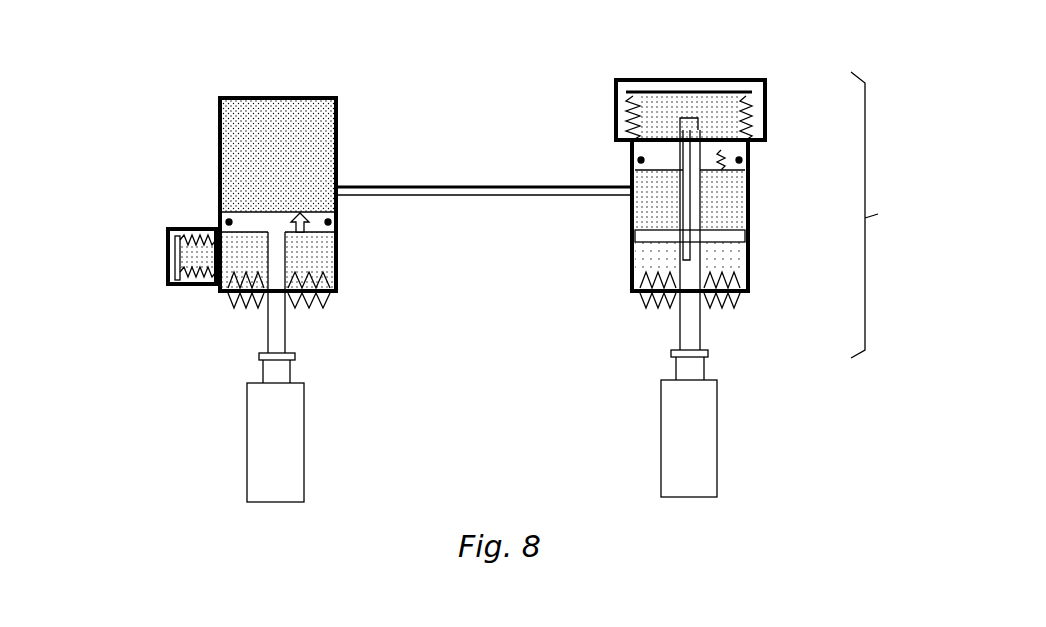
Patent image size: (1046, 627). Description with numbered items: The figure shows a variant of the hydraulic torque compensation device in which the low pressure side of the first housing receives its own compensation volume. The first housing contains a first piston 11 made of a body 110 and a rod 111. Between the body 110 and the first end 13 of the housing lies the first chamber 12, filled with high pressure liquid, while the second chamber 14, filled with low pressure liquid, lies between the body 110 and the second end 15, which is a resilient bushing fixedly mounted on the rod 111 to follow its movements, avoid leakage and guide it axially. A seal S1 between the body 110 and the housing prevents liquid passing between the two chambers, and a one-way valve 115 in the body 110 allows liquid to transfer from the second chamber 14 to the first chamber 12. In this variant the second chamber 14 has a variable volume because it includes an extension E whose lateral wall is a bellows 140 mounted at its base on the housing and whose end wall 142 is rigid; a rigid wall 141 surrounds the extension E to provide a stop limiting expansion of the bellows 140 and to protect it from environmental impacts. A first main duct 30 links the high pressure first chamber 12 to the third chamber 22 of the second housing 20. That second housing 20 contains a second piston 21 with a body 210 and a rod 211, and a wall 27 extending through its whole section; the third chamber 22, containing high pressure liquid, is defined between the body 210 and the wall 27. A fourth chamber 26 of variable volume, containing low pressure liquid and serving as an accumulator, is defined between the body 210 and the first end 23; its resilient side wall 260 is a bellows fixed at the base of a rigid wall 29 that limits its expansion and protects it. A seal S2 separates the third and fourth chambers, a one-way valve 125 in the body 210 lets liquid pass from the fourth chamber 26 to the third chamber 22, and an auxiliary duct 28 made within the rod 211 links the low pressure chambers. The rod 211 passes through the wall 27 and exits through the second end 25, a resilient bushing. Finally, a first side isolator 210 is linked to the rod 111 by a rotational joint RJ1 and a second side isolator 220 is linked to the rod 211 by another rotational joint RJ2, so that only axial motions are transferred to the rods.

The first end 13 is at (268, 93).
The first chamber 12 is at (311, 128).
The first piston 11 is at (262, 210).
The body 110 is at (242, 221).
The second chamber 14 is at (311, 268).
The one-way valve 115 is at (338, 240).
The second end 15 is at (313, 312).
The rod 111 is at (291, 340).
The rotational joint RJ1 is at (262, 346).
The first side isolator 210 is at (273, 506).
The extension E is at (163, 287).
The rigid wall 141 is at (164, 261).
The end wall 142 is at (172, 236).
The bellows 140 is at (200, 286).
The seal S1 is at (333, 224).
The first main duct 30 is at (503, 184).
The second housing 20 is at (771, 197).
The first end 23 is at (729, 87).
The rigid wall 29 is at (681, 78).
The fourth chamber 26 is at (652, 107).
The resilient side wall 260 is at (626, 113).
The second piston 21 is at (665, 160).
The seal S2 is at (753, 162).
The one-way valve 125 is at (734, 166).
The auxiliary duct 28 is at (680, 190).
The third chamber 22 is at (660, 212).
The rod 211 is at (743, 238).
The wall 27 is at (735, 249).
The second end 25 is at (728, 301).
The rotational joint RJ2 is at (677, 345).
The second side isolator 220 is at (688, 500).